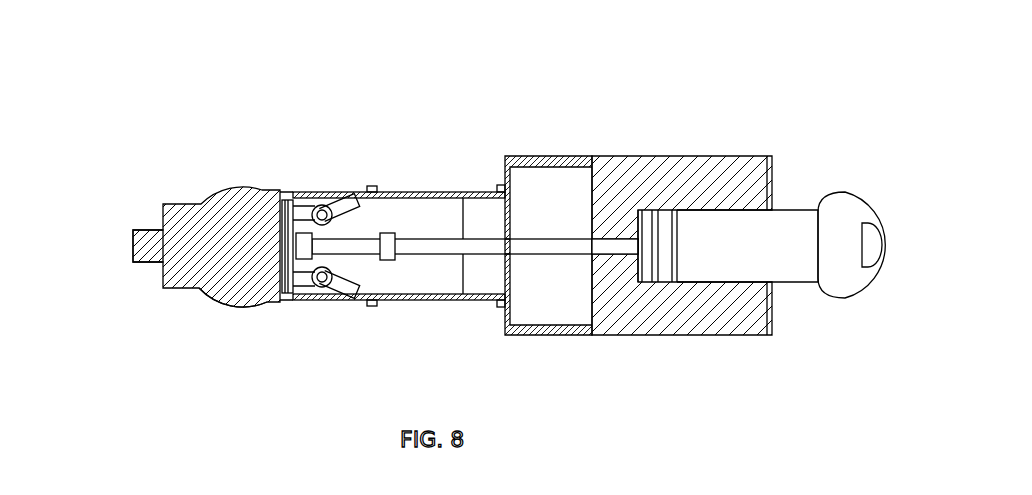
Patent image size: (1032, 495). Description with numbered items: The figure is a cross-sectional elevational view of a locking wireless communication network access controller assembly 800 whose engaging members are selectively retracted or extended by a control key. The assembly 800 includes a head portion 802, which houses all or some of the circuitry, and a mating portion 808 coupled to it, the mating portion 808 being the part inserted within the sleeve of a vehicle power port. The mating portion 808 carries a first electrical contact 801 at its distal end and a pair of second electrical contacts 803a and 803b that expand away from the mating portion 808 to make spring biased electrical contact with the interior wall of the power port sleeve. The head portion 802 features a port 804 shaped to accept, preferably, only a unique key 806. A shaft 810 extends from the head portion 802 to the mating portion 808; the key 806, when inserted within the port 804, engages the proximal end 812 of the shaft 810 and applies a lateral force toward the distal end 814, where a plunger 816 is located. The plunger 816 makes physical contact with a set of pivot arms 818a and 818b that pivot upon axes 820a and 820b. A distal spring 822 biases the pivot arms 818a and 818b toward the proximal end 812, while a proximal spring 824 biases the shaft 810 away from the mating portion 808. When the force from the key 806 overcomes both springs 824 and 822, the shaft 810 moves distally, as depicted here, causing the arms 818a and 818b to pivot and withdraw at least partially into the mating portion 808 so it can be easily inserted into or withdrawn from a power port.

The wireless communication network access controller assembly 800 is at (210, 90).
The first electrical contact 801 is at (133, 248).
The head portion 802 is at (662, 110).
The second electrical contact 803a is at (247, 187).
The second electrical contact 803b is at (217, 303).
The port 804 is at (731, 222).
The key 806 is at (787, 260).
The mating portion 808 is at (375, 133).
The shaft 810 is at (527, 240).
The proximal end 812 is at (635, 298).
The distal end 814 is at (353, 262).
The plunger 816 is at (298, 240).
The pivot arm 818a is at (350, 197).
The pivot arm 818b is at (343, 288).
The axis 820a is at (320, 213).
The axis 820b is at (317, 280).
The distal spring 822 is at (280, 255).
The proximal spring 824 is at (647, 258).